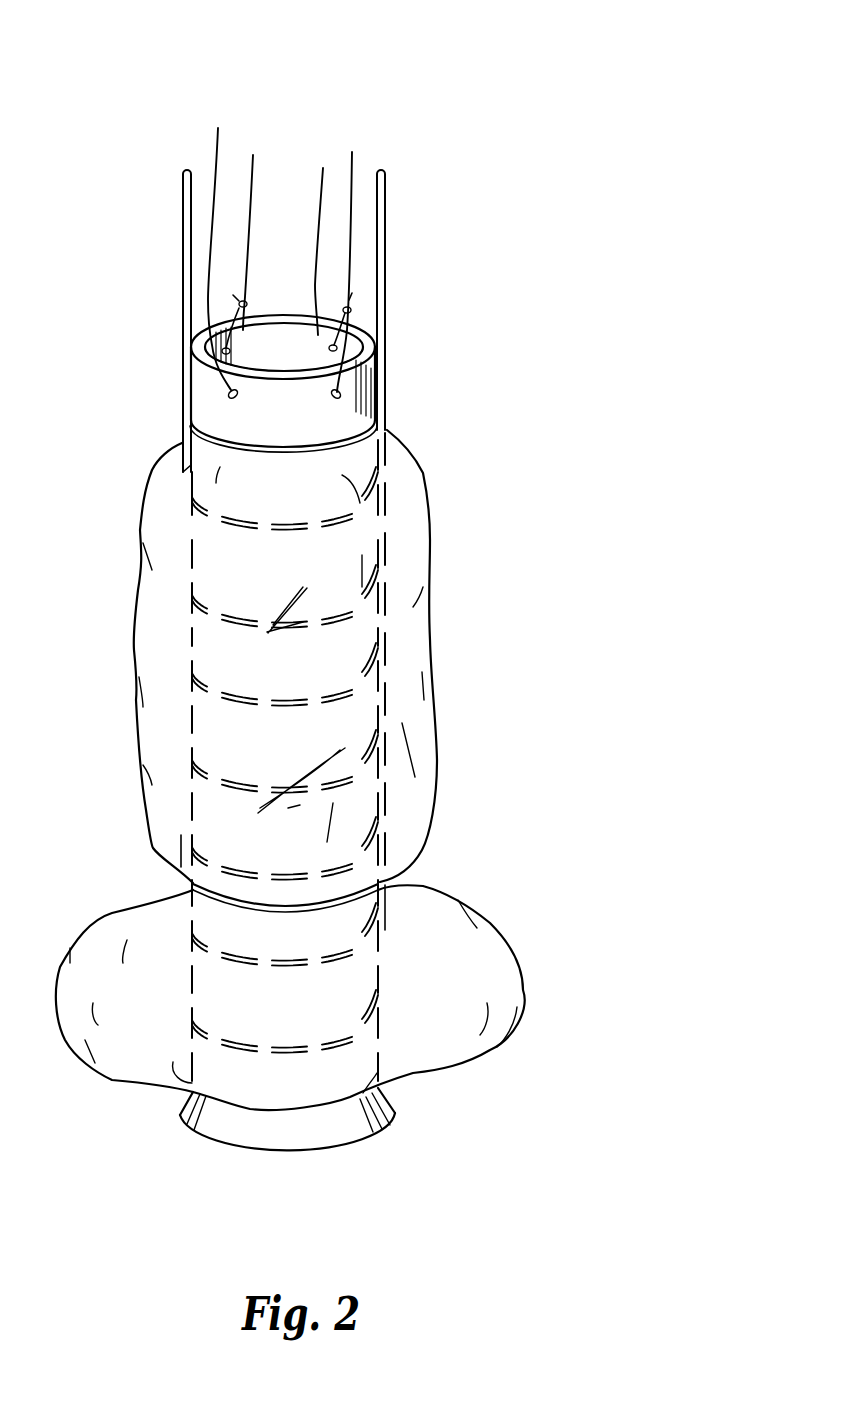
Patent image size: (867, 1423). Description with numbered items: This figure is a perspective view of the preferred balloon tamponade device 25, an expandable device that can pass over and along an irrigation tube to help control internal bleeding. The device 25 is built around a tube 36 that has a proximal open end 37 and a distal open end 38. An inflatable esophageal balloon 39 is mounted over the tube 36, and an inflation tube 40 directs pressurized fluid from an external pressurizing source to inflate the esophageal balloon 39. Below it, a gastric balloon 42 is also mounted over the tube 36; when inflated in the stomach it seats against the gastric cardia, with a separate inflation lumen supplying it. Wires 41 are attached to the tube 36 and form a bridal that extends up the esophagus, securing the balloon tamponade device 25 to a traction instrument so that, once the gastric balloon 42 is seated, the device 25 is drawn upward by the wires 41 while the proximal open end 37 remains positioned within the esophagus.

The balloon tamponade device 25 is at (414, 123).
The tube 36 is at (370, 407).
The proximal open end 37 is at (285, 304).
The distal open end 38 is at (290, 1157).
The inflatable esophageal balloon 39 is at (425, 782).
The inflation tube 40 is at (395, 250).
The wires 41 is at (216, 168).
The gastric balloon 42 is at (513, 942).